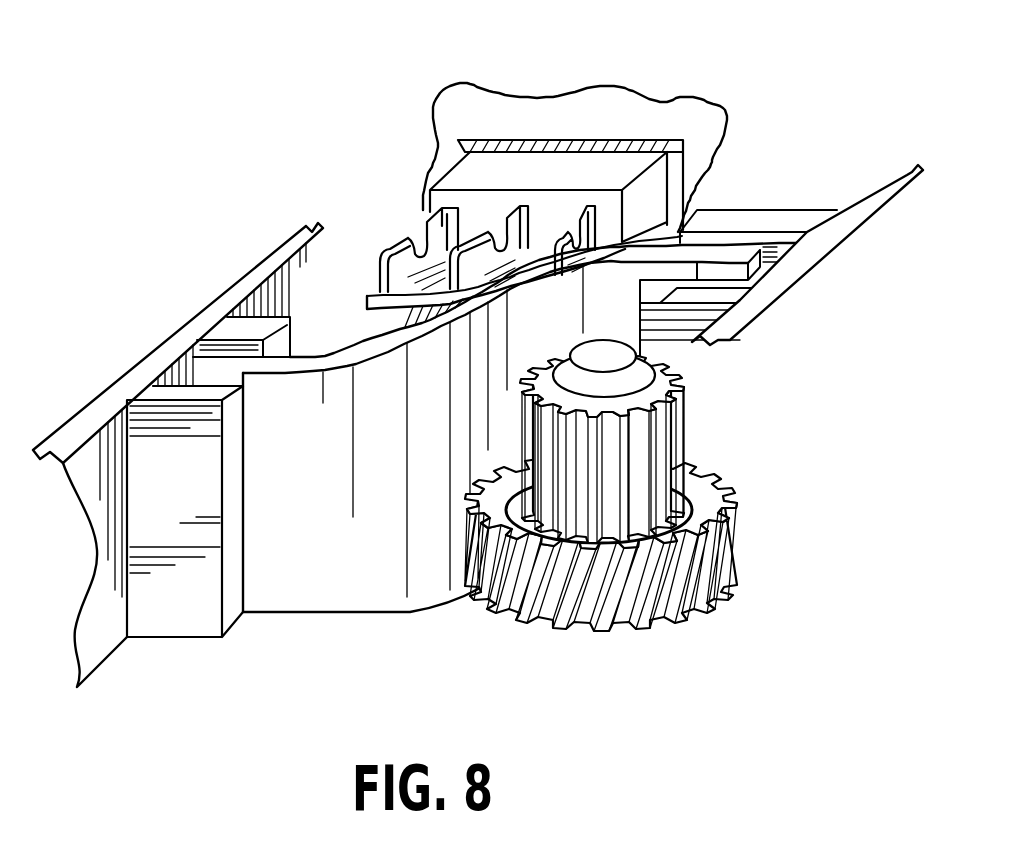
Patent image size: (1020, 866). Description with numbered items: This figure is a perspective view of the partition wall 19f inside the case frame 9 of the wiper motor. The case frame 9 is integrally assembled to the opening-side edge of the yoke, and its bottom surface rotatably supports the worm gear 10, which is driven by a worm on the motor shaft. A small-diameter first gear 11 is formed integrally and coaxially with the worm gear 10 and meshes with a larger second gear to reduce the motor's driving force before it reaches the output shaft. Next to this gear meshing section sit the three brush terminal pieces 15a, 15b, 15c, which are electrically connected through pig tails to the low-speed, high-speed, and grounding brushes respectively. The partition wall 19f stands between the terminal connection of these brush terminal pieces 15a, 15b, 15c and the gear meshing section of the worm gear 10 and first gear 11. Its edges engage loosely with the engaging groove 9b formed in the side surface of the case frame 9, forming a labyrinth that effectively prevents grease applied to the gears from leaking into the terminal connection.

The case frame 9 is at (568, 125).
The engaging groove 9b is at (783, 245).
The worm gear 10 is at (613, 605).
The first gear 11 is at (640, 463).
The brush terminal piece 15a is at (430, 210).
The brush terminal piece 15b is at (512, 207).
The brush terminal piece 15c is at (580, 210).
The partition wall 19f is at (356, 548).